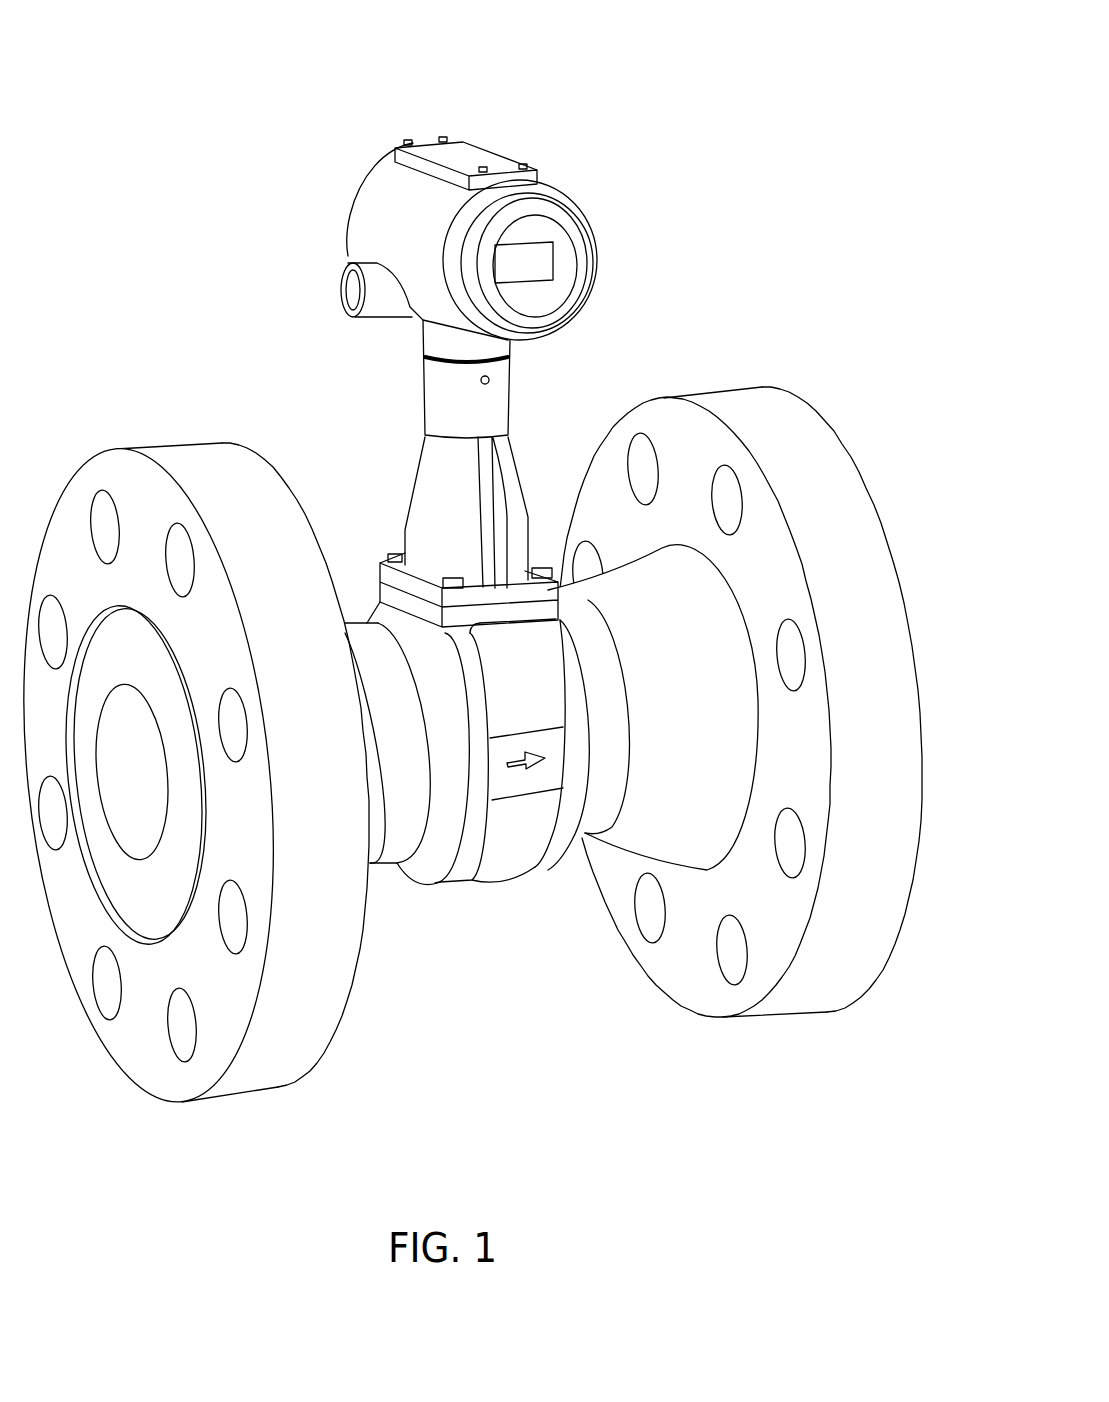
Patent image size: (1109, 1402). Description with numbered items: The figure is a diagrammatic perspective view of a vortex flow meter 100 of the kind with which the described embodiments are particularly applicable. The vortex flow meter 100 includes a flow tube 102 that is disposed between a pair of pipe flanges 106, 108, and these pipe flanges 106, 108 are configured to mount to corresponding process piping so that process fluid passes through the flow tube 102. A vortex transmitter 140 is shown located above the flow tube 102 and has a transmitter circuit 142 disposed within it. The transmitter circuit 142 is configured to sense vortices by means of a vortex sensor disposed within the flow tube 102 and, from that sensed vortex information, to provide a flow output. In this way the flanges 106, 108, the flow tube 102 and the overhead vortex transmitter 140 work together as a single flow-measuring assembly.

The vortex flow meter 100 is at (652, 104).
The flow tube 102 is at (405, 808).
The pipe flange 106 is at (213, 463).
The pipe flange 108 is at (750, 413).
The vortex transmitter 140 is at (473, 158).
The transmitter circuit 142 is at (533, 258).